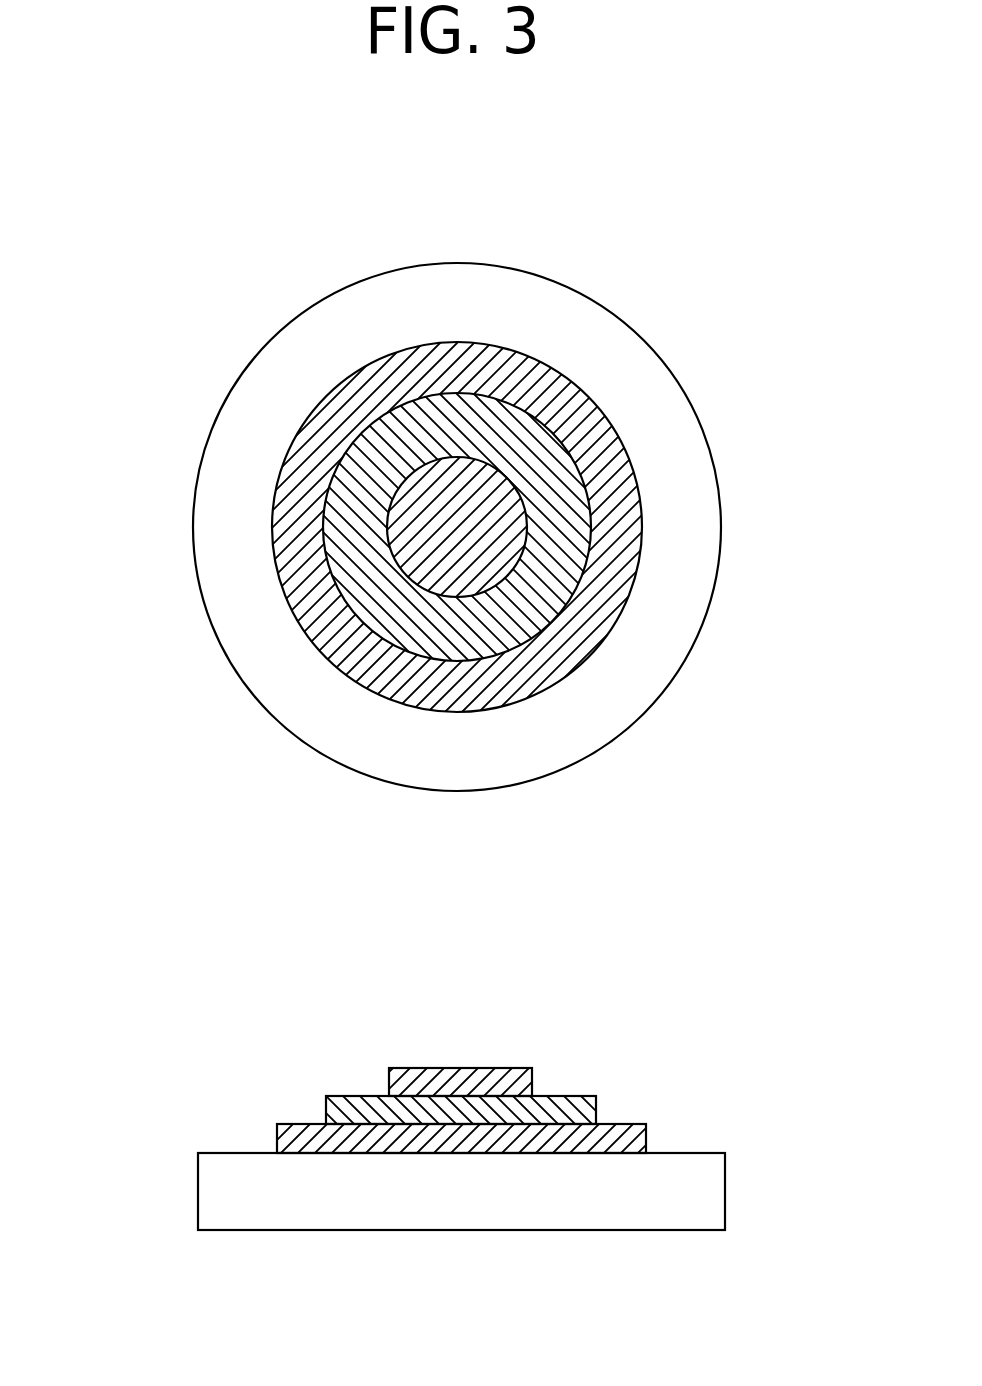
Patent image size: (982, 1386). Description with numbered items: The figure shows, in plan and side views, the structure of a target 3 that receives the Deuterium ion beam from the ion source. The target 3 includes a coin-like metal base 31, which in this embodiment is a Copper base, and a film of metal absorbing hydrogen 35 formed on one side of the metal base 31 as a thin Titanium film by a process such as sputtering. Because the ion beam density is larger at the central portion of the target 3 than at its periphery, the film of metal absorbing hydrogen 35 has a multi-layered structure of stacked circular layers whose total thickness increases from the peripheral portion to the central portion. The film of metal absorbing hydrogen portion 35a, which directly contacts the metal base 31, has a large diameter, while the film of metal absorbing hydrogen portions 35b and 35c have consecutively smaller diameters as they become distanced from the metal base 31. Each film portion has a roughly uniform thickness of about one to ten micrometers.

The target 3 is at (491, 678).
The metal base 31 is at (720, 527).
The film of metal absorbing hydrogen 35 is at (491, 639).
The film of metal absorbing hydrogen portion 35a is at (457, 342).
The film of metal absorbing hydrogen portion 35b is at (356, 484).
The film of metal absorbing hydrogen portion 35c is at (468, 560).